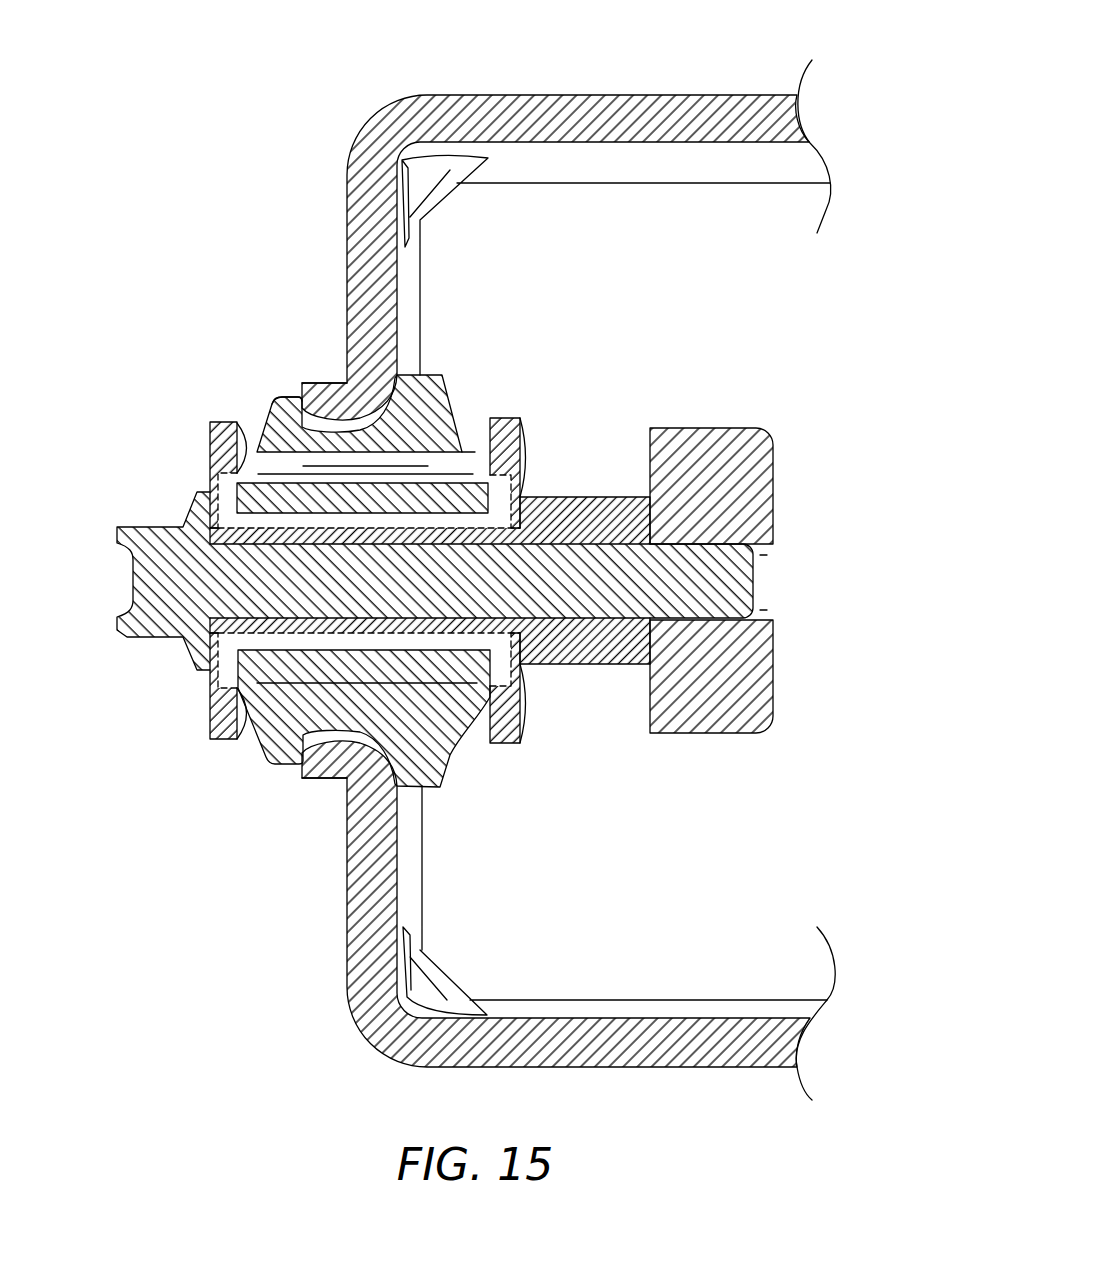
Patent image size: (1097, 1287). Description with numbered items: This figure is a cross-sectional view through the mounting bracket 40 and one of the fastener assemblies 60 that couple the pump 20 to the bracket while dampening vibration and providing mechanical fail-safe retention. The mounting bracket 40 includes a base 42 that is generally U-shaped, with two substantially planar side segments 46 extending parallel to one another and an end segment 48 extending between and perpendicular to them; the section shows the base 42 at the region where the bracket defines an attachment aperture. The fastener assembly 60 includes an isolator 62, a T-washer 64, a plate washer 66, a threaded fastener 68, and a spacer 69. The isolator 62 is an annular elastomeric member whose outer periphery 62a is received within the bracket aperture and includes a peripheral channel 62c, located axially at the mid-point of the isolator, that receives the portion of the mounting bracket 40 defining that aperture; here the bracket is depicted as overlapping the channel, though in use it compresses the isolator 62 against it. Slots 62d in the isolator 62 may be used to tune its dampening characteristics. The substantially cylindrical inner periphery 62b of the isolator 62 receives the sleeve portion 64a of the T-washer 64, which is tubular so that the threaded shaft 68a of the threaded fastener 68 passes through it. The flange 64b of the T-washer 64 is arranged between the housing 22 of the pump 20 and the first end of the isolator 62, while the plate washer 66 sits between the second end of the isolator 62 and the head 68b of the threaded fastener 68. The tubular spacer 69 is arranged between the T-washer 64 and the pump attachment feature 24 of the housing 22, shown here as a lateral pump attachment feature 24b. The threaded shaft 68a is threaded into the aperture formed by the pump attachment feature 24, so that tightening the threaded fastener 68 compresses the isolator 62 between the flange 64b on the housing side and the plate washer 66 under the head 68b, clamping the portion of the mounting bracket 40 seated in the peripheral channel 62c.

The fastener assembly 60 is at (176, 212).
The mounting bracket 40 is at (683, 103).
The base 42 is at (568, 580).
The side segment 46 is at (697, 1037).
The end segment 48 is at (358, 927).
The isolator 62 is at (427, 390).
The outer periphery 62a is at (279, 395).
The inner periphery 62b is at (295, 637).
The peripheral channel 62c is at (330, 382).
The slot 62d is at (440, 465).
The T-washer 64 is at (507, 460).
The sleeve portion 64a is at (247, 648).
The flange 64b is at (508, 580).
The plate washer 66 is at (219, 451).
The threaded fastener 68 is at (120, 527).
The threaded shaft 68a is at (608, 596).
The head 68b is at (163, 581).
The spacer 69 is at (548, 644).
The pump 20 is at (747, 473).
The housing 22 is at (711, 580).
The pump attachment feature 24 is at (711, 580).
The lateral pump attachment feature 24b is at (711, 580).